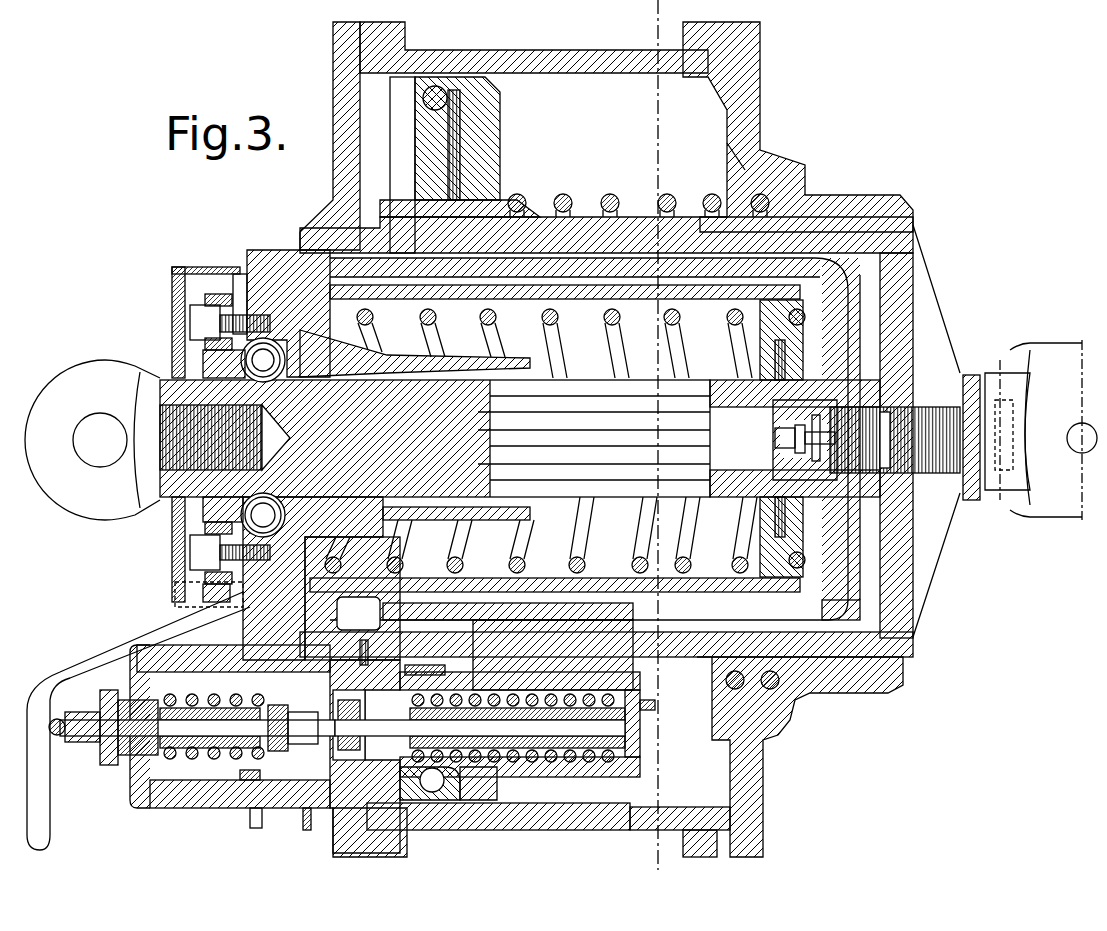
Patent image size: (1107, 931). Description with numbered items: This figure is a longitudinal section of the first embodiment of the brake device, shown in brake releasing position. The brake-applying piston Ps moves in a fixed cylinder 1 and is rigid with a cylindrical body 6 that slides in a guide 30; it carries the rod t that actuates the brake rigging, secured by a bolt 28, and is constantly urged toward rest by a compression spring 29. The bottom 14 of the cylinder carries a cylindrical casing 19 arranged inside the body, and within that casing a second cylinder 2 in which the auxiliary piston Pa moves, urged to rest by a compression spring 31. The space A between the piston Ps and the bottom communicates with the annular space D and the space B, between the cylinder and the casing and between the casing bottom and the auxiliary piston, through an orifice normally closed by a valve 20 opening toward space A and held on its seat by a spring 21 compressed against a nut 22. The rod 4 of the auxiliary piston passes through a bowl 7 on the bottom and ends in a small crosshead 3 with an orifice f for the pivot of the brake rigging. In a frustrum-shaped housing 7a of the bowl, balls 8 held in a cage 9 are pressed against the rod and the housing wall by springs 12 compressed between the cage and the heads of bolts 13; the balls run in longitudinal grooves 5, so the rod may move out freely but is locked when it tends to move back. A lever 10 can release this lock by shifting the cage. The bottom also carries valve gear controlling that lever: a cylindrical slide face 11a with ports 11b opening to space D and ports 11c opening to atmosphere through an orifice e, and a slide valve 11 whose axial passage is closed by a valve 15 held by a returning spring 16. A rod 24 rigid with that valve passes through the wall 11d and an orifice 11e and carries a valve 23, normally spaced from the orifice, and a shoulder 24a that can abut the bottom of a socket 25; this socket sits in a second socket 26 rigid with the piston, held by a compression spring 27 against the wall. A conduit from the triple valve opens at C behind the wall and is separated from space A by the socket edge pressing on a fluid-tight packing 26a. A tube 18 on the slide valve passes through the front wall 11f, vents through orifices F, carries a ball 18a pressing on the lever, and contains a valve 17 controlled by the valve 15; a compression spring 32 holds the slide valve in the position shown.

The fixed cylinder 1 is at (470, 62).
The bottom of the cylinder 14 is at (340, 78).
The brake-applying piston Ps is at (462, 145).
The compression spring 29 is at (668, 200).
The bowl 7 is at (262, 262).
The springs 12 is at (212, 296).
The bolts 13 is at (195, 318).
The cage 9 is at (210, 357).
The frustrum-shaped housing 7a is at (305, 340).
The second cylinder 2 is at (588, 290).
The rod of the auxiliary piston 4 is at (576, 392).
The cylindrical casing 19 is at (693, 270).
The compression spring 31 is at (728, 350).
The small crosshead 3 is at (92, 440).
The orifice f is at (74, 443).
The valve 20 is at (776, 435).
The spring 21 is at (808, 458).
The nut 22 is at (900, 430).
The conduit opening c is at (1068, 438).
The rod t is at (1015, 430).
The longitudinal grooves 5 is at (580, 448).
The auxiliary piston Pa is at (760, 540).
The space B is at (838, 548).
The bolt 28 is at (972, 500).
The annular space D is at (710, 592).
The balls 8 is at (263, 515).
The valve 23 is at (325, 630).
The lever 10 is at (70, 653).
The valve 17 is at (243, 715).
The bottom of the slide valve housing 11d is at (358, 613).
The orifice 11e is at (400, 680).
The returning spring 16 is at (352, 700).
The ball 18a is at (70, 712).
The orifices F is at (90, 745).
The tube 18 is at (108, 760).
The compression spring 32 is at (212, 738).
The front wall of the slide face 11f is at (138, 800).
The cylindrical slide face 11a is at (208, 800).
The ports 11c is at (248, 780).
The orifice e is at (253, 825).
The slide valve 11 is at (300, 790).
The ports 11b is at (340, 800).
The valve 15 is at (310, 812).
The fluid-tight packing 26a is at (415, 800).
The conduit opening C is at (440, 800).
The space A is at (470, 705).
The compression spring 27 is at (560, 758).
The socket 25 is at (618, 736).
The shoulder 24a is at (638, 712).
The second socket 26 is at (640, 735).
The rod 24 is at (640, 757).
The cylindrical body 6 is at (672, 660).
The guide 30 is at (843, 672).